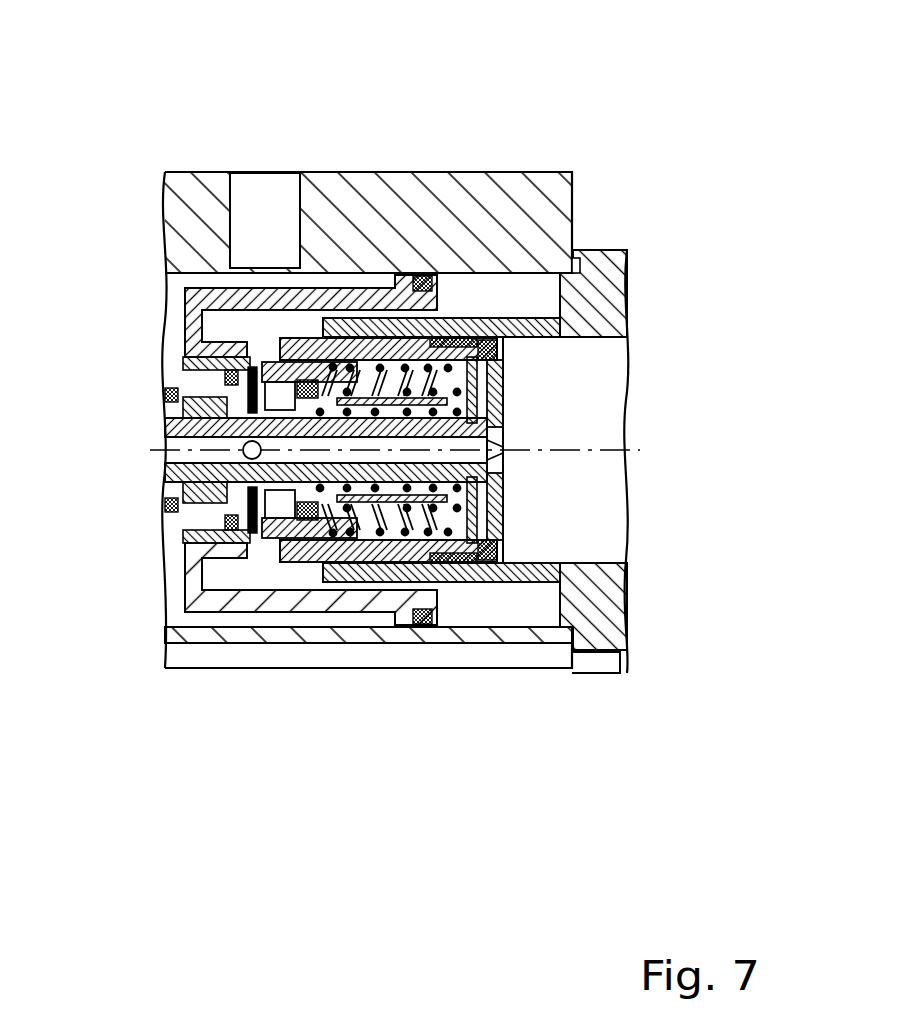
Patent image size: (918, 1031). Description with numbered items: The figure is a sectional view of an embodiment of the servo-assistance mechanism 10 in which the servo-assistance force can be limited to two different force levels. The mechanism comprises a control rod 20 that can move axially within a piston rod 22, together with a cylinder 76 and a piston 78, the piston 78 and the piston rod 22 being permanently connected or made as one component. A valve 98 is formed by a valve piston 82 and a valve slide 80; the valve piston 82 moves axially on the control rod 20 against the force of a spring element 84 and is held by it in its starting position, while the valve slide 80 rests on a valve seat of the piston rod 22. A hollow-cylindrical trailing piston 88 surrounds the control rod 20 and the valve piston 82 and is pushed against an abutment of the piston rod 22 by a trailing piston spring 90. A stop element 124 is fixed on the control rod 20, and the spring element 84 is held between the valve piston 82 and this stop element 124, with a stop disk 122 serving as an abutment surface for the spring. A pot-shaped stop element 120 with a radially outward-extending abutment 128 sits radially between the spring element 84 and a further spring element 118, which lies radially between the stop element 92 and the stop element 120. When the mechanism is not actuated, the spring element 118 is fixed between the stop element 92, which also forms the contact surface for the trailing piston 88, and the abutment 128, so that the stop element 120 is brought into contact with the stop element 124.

The servo-assistance mechanism 10 is at (250, 135).
The control rod 20 is at (165, 453).
The piston rod 22 is at (356, 355).
The cylinder 76 is at (415, 230).
The piston 78 is at (292, 300).
The valve slide 80 is at (165, 523).
The valve piston 82 is at (298, 525).
The spring element 84 is at (342, 528).
The trailing piston 88 is at (265, 525).
The trailing piston spring 90 is at (495, 336).
The stop element 92 is at (487, 372).
The valve 98 is at (170, 393).
The further spring element 118 is at (448, 530).
The pot-shaped stop element 120 is at (398, 535).
The stop disk 122 is at (465, 478).
The stop element 124 is at (480, 460).
The abutment 128 is at (323, 525).